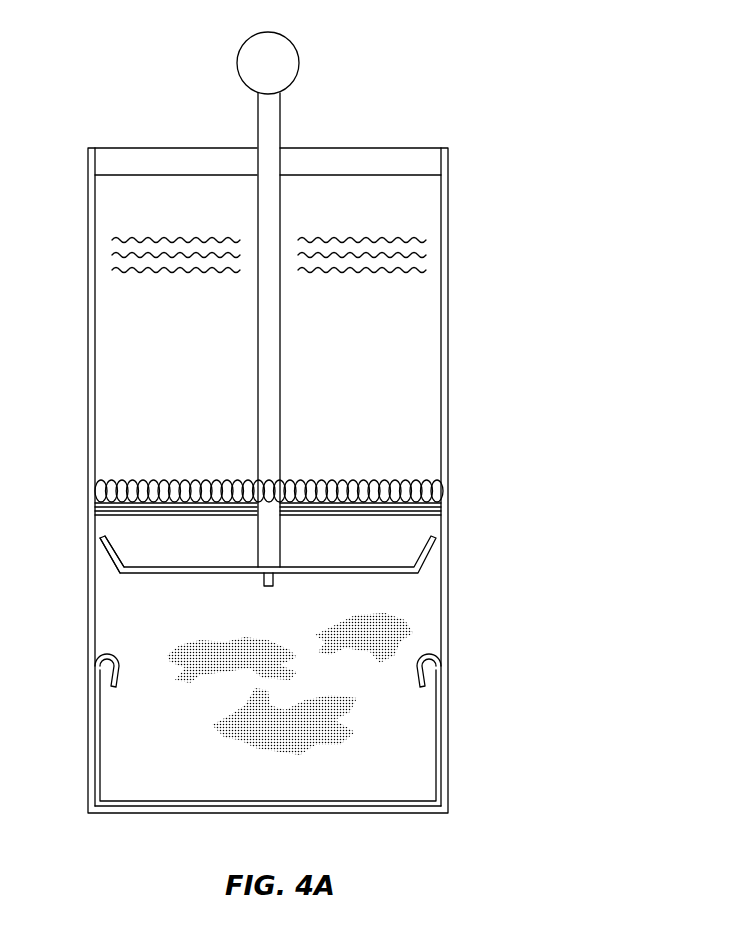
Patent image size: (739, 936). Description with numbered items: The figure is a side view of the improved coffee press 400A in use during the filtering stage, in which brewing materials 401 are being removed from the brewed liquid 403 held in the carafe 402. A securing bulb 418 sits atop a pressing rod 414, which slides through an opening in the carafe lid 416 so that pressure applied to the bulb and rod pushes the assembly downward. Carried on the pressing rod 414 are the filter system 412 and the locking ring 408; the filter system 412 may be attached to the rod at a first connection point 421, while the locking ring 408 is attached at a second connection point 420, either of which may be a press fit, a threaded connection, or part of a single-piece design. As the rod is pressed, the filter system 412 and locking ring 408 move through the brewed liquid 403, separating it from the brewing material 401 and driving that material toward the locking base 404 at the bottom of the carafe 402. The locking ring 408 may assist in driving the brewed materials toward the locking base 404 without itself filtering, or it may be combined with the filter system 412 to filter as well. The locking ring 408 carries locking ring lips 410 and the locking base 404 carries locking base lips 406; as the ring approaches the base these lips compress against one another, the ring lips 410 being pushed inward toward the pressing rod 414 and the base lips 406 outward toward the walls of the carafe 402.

The improved coffee press 400A is at (533, 315).
The brewing materials 401 is at (409, 618).
The carafe 402 is at (449, 222).
The brewed liquid 403 is at (194, 224).
The locking base 404 is at (153, 801).
The locking base lip 406 is at (120, 650).
The locking ring 408 is at (312, 566).
The locking ring lip 410 is at (117, 580).
The filter system 412 is at (297, 476).
The pressing rod 414 is at (281, 122).
The carafe lid 416 is at (373, 148).
The securing bulb 418 is at (284, 38).
The second connection point 420 is at (268, 587).
The first connection point 421 is at (252, 518).